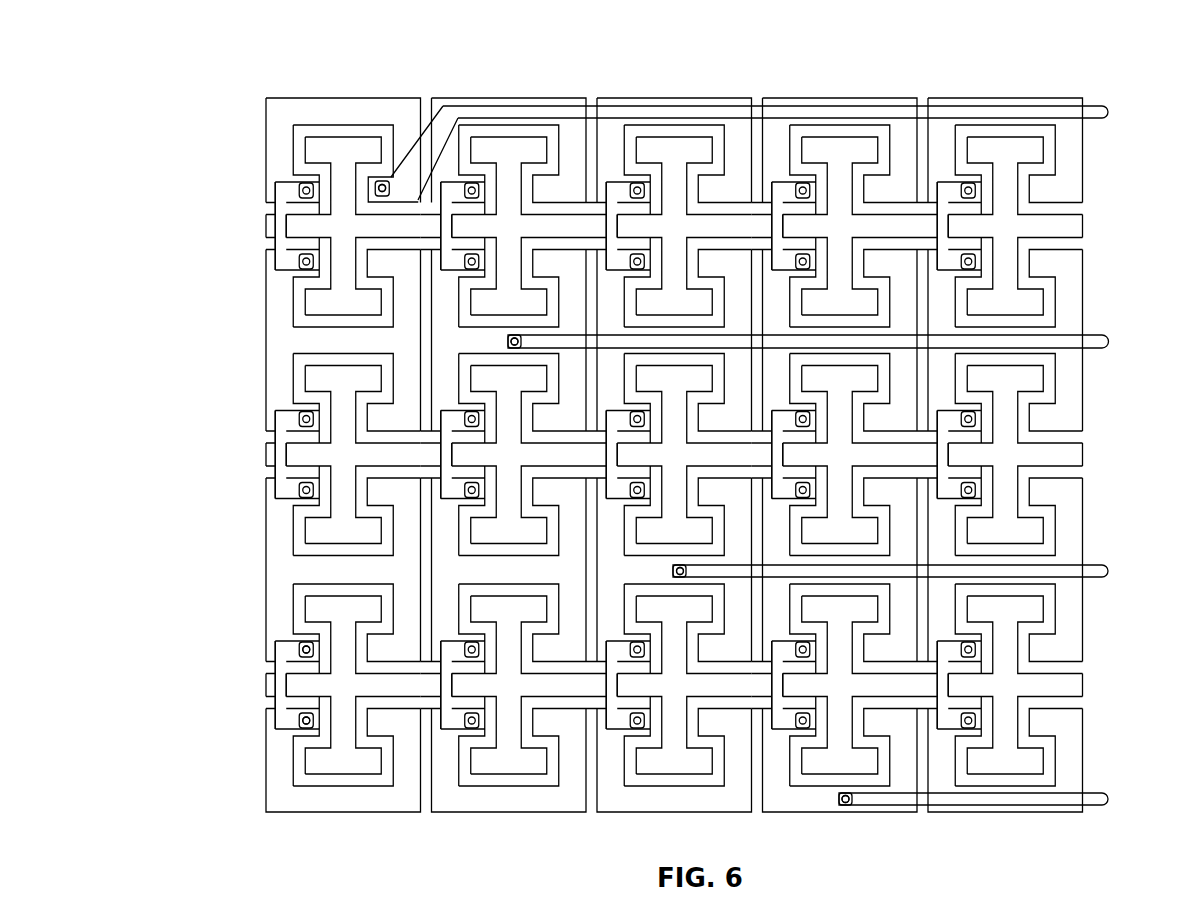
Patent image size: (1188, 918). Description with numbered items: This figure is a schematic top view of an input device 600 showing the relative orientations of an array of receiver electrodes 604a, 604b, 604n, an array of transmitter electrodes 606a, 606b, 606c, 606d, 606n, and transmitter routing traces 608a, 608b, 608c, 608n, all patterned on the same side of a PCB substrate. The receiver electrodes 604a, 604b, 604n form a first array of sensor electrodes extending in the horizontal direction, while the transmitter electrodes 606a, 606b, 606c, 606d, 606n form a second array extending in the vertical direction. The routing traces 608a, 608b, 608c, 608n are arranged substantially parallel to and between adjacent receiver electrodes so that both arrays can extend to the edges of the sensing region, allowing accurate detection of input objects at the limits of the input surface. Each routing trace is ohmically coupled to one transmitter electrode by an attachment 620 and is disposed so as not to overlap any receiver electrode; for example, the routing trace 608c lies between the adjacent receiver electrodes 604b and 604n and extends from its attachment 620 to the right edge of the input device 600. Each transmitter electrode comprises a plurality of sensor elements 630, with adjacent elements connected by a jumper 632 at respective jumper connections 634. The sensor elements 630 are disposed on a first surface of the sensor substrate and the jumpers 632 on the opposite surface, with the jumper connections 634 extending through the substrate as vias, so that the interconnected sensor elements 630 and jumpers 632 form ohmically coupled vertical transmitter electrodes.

The input device 600 is at (216, 77).
The receiver electrode 604a is at (1086, 226).
The receiver electrode 604b is at (1086, 455).
The receiver electrode 604n is at (1086, 686).
The transmitter electrode 606a is at (323, 88).
The transmitter electrode 606b is at (515, 88).
The transmitter electrode 606c is at (673, 88).
The transmitter electrode 606d is at (844, 88).
The transmitter electrode 606n is at (1001, 88).
The transmitter routing trace 608a is at (1106, 108).
The transmitter routing trace 608b is at (1106, 337).
The transmitter routing trace 608c is at (1106, 567).
The transmitter routing trace 608n is at (1106, 795).
The attachment 620 is at (385, 181).
The sensor element 630 is at (268, 332).
The jumper 632 is at (279, 227).
The jumper connection 634 is at (300, 651).